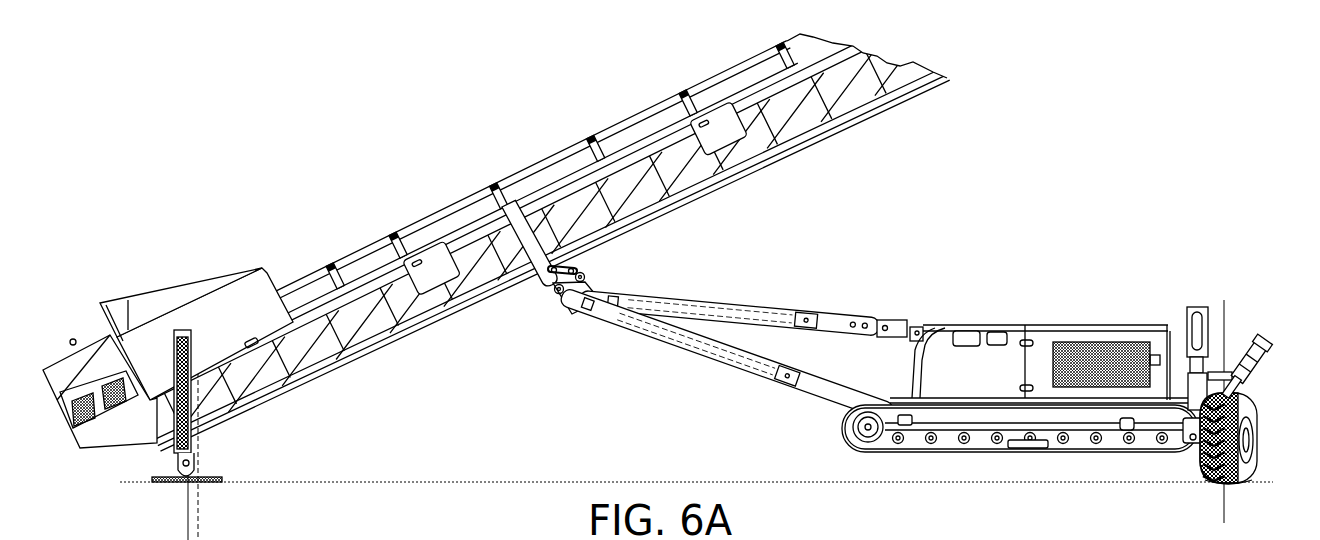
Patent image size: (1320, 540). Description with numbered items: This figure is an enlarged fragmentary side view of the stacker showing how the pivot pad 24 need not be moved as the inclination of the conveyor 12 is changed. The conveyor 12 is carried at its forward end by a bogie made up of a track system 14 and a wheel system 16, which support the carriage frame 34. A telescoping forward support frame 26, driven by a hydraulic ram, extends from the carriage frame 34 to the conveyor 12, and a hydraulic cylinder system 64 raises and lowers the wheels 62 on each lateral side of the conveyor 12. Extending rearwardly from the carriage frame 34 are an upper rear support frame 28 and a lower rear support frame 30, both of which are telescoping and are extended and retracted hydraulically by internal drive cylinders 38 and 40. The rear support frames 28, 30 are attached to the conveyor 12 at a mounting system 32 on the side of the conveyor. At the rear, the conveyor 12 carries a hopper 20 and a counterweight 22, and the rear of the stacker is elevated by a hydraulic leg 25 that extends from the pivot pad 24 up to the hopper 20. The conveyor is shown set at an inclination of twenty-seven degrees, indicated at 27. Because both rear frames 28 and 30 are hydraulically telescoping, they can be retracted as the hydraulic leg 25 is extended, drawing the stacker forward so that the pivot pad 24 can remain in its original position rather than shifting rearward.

The conveyor 12 is at (522, 170).
The track system 14 is at (1027, 457).
The wheel system 16 is at (1258, 456).
The hopper 20 is at (213, 277).
The counterweight 22 is at (111, 450).
The pivot pad 24 is at (205, 474).
The hydraulic leg 25 is at (180, 447).
The telescoping forward support frame 26 is at (1260, 380).
The inclination angle 27 is at (466, 323).
The upper rear support frame 28 is at (637, 299).
The lower rear support frame 30 is at (650, 342).
The mounting system 32 is at (541, 294).
The carriage frame 34 is at (1013, 324).
The internal drive cylinder 38 is at (762, 313).
The internal drive cylinder 40 is at (695, 355).
The wheels 62 is at (1245, 481).
The hydraulic cylinder system 64 is at (1213, 325).